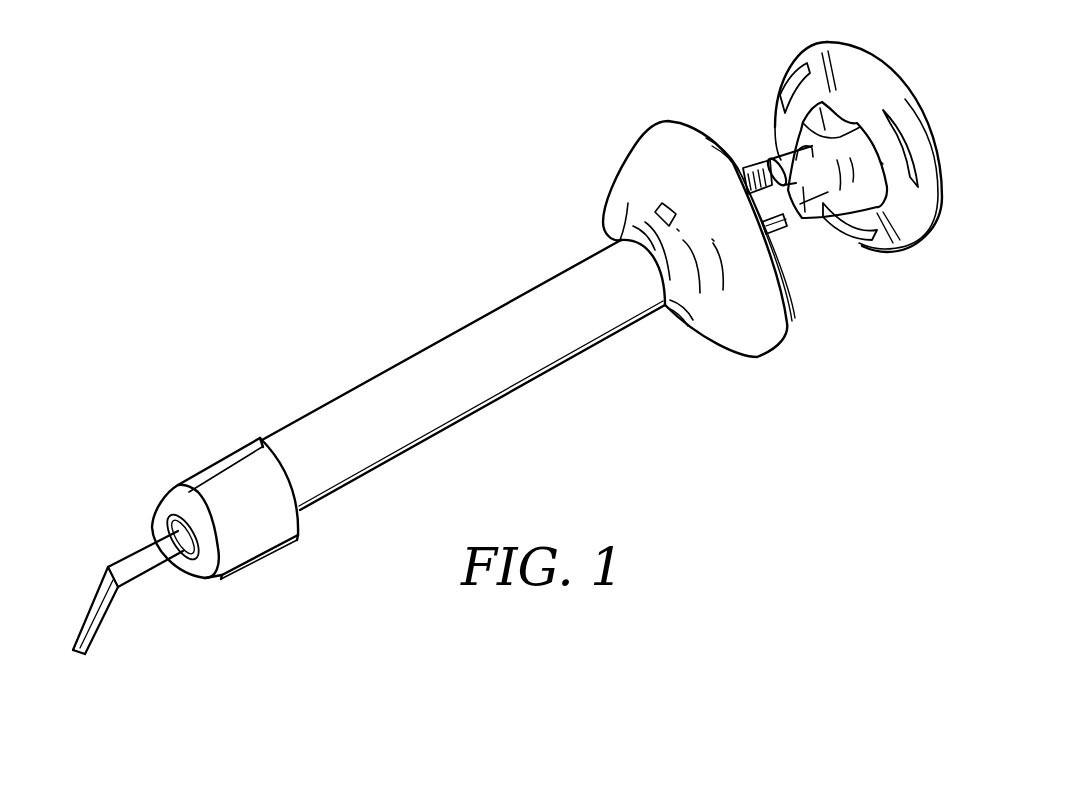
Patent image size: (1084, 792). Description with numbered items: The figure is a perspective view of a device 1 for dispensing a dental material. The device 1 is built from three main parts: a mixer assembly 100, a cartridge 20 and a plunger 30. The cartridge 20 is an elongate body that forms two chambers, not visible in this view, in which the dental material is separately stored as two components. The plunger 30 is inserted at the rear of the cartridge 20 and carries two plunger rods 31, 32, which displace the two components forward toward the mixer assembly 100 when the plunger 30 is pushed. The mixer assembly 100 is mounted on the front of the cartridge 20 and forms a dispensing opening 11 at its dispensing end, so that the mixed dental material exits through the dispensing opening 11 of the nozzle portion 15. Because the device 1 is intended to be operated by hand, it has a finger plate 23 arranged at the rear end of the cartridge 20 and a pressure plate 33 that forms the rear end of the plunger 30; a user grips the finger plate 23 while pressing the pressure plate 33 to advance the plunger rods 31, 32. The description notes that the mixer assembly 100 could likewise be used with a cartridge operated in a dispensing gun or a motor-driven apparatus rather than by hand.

The device 1 is at (359, 295).
The dispensing opening 11 is at (80, 657).
The nozzle 15 is at (112, 606).
The cartridge 20 is at (570, 333).
The finger plate 23 is at (753, 333).
The plunger 30 is at (822, 196).
The plunger rod 31 is at (784, 231).
The plunger rod 32 is at (752, 165).
The pressure plate 33 is at (913, 103).
The mixer assembly 100 is at (250, 528).